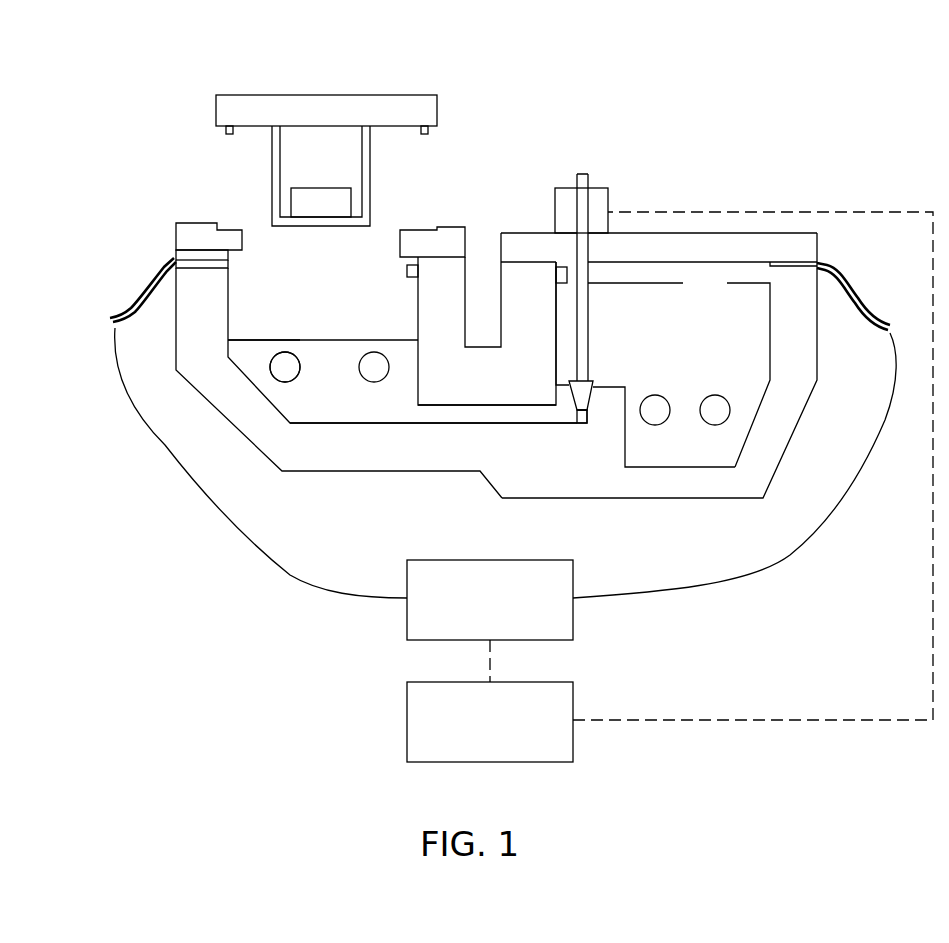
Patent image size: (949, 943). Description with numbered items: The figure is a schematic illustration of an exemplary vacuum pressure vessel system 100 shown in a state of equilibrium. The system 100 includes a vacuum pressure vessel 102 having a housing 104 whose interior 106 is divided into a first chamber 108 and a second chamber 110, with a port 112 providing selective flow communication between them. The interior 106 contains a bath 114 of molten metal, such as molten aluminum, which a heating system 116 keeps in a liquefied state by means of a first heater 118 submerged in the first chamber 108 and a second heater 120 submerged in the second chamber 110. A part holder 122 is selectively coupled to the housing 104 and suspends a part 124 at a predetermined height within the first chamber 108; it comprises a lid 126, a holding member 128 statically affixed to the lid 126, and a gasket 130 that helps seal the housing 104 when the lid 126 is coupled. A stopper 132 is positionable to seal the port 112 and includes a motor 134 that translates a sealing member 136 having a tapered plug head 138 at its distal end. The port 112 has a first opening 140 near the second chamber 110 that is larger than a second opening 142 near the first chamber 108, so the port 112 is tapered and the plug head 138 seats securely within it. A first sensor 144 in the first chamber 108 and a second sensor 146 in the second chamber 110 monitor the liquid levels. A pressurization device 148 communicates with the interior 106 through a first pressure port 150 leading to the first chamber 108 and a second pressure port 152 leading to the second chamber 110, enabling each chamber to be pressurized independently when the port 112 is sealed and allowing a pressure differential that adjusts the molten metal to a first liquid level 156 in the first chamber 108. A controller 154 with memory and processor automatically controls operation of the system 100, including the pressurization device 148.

The vacuum pressure vessel system 100 is at (817, 72).
The vacuum pressure vessel 102 is at (147, 141).
The housing 104 is at (200, 393).
The interior 106 is at (385, 408).
The first chamber 108 is at (268, 325).
The second chamber 110 is at (723, 288).
The port 112 is at (577, 423).
The bath of molten metal 114 is at (668, 345).
The heating system 116 is at (271, 383).
The first heater 118 is at (374, 383).
The second heater 120 is at (713, 425).
The part holder 122 is at (457, 64).
The part 124 is at (337, 188).
The lid 126 is at (362, 95).
The holding member 128 is at (272, 158).
The gasket 130 is at (428, 132).
The stopper 132 is at (611, 171).
The motor 134 is at (608, 193).
The sealing member 136 is at (589, 272).
The plug head 138 is at (595, 381).
The first opening 140 is at (567, 359).
The second opening 142 is at (566, 409).
The first sensor 144 is at (406, 270).
The second sensor 146 is at (562, 267).
The pressurization device 148 is at (573, 615).
The first pressure port 150 is at (167, 251).
The second pressure port 152 is at (829, 246).
The controller 154 is at (573, 738).
The first liquid level 156 is at (281, 332).